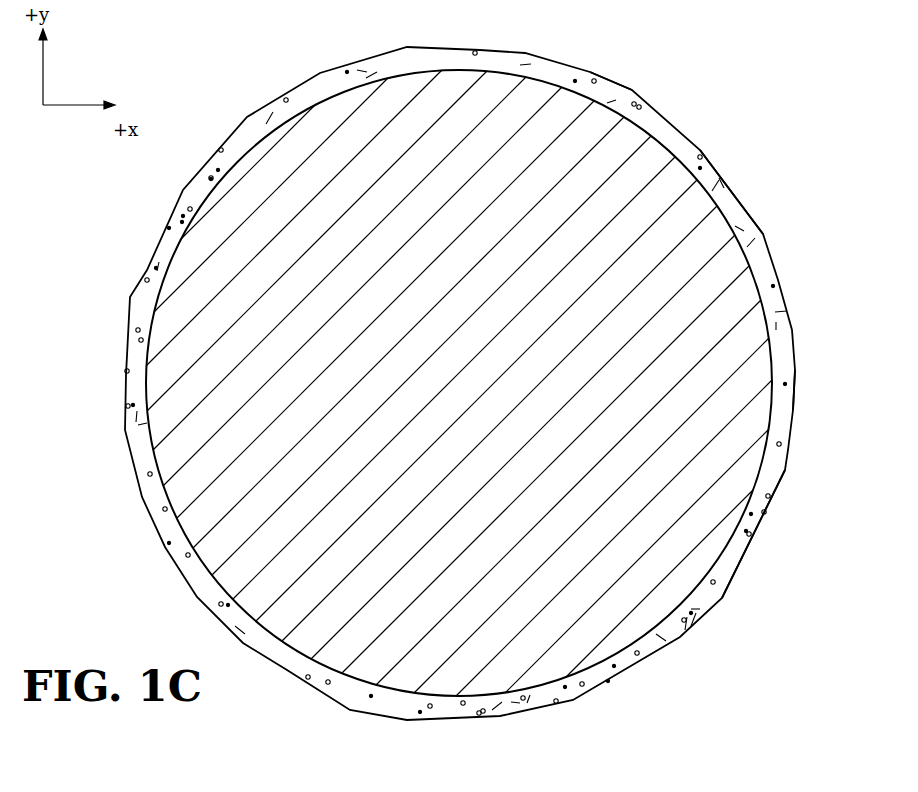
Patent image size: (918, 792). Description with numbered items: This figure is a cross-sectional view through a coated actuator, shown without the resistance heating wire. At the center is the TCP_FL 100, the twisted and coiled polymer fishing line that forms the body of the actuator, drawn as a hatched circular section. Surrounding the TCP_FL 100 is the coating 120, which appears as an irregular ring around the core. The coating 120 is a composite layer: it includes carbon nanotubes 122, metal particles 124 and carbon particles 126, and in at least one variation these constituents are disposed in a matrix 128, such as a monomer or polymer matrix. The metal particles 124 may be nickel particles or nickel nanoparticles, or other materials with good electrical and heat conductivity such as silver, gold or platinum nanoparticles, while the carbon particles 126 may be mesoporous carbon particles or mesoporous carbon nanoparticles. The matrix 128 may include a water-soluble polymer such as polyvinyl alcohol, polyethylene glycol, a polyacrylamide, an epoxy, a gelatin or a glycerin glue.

The TCP_FL 100 is at (645, 128).
The coating 120 is at (285, 84).
The carbon nanotubes 122 is at (607, 88).
The metal particles 124 is at (760, 237).
The carbon particles 126 is at (790, 410).
The matrix 128 is at (723, 575).